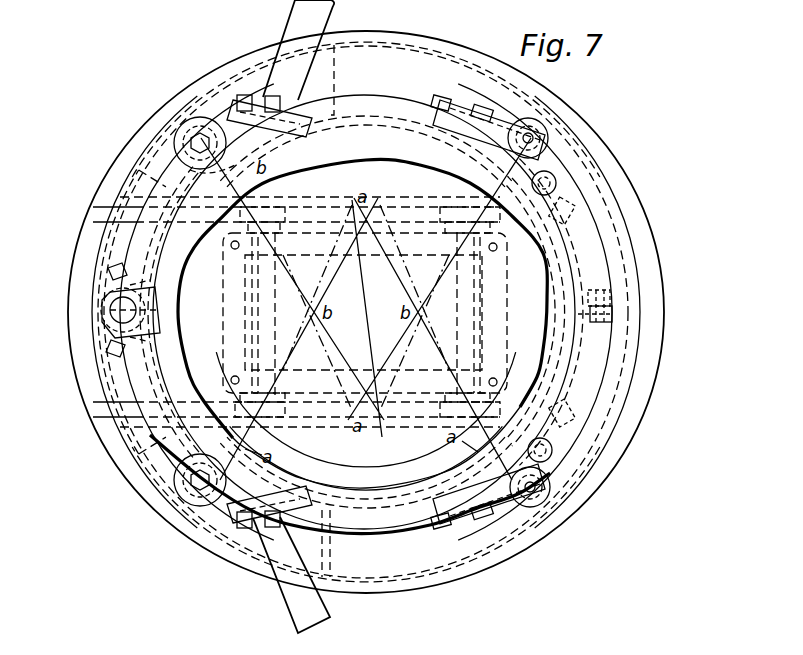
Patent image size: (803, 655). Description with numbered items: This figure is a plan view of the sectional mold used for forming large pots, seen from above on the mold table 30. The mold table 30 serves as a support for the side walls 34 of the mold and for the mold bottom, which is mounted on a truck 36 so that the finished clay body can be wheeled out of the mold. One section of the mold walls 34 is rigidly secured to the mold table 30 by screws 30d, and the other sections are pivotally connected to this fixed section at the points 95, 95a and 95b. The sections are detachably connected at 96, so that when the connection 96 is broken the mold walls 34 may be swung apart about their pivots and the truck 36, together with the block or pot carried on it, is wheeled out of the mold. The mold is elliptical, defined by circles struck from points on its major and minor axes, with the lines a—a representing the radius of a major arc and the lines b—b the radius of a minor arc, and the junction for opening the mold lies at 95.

The mold table 30 is at (661, 283).
The screws 30d is at (548, 452).
The side walls of the mold 34 is at (607, 248).
The truck 36 is at (226, 302).
The pivotal connection point 95 is at (110, 310).
The pivotal connection point 95a is at (523, 130).
The pivotal connection point 95b is at (540, 497).
The detachable connection 96 is at (236, 128).